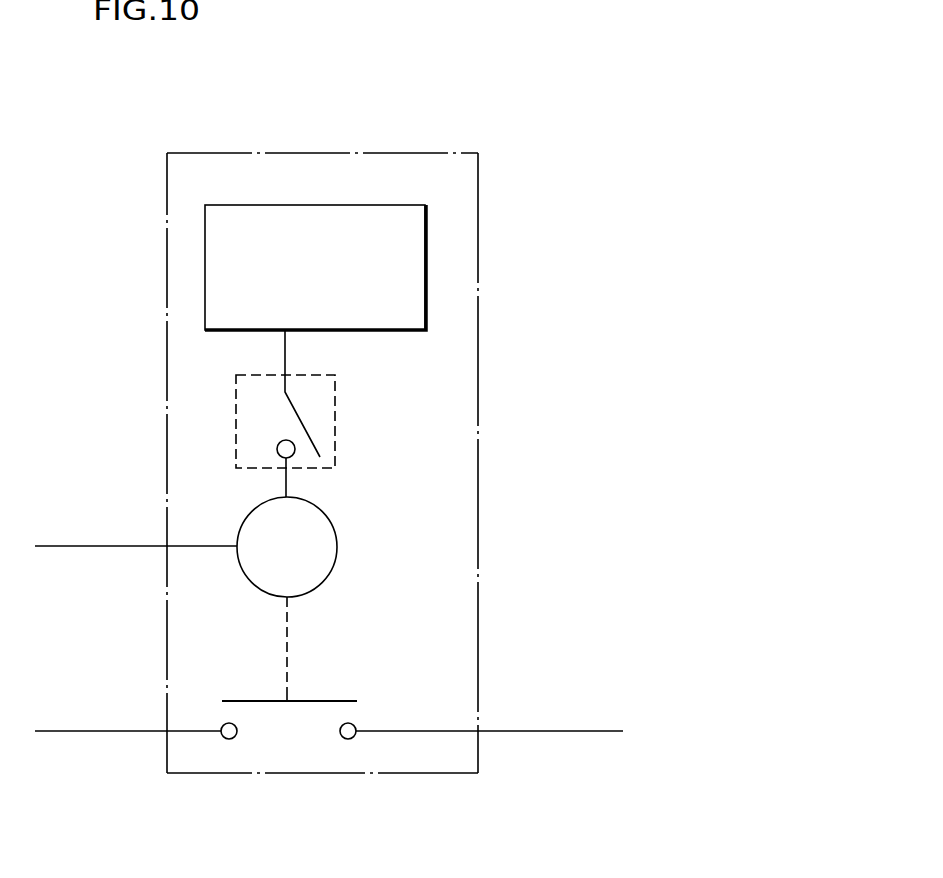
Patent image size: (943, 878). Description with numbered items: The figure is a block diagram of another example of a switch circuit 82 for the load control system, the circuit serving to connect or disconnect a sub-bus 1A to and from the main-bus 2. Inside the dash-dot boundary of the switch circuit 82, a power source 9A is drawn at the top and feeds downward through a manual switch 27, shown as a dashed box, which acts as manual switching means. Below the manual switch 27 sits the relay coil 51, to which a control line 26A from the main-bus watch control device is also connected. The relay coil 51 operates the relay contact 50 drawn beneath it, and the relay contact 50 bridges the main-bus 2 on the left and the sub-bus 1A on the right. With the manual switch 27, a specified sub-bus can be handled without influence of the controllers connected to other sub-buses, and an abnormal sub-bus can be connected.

The switch circuit 82 is at (478, 373).
The power source 9A is at (427, 282).
The manual switch 27 is at (335, 443).
The relay coil 51 is at (337, 560).
The control line 26A is at (70, 546).
The relay contact 50 is at (333, 701).
The main-bus 2 is at (73, 731).
The sub-bus 1A is at (545, 731).